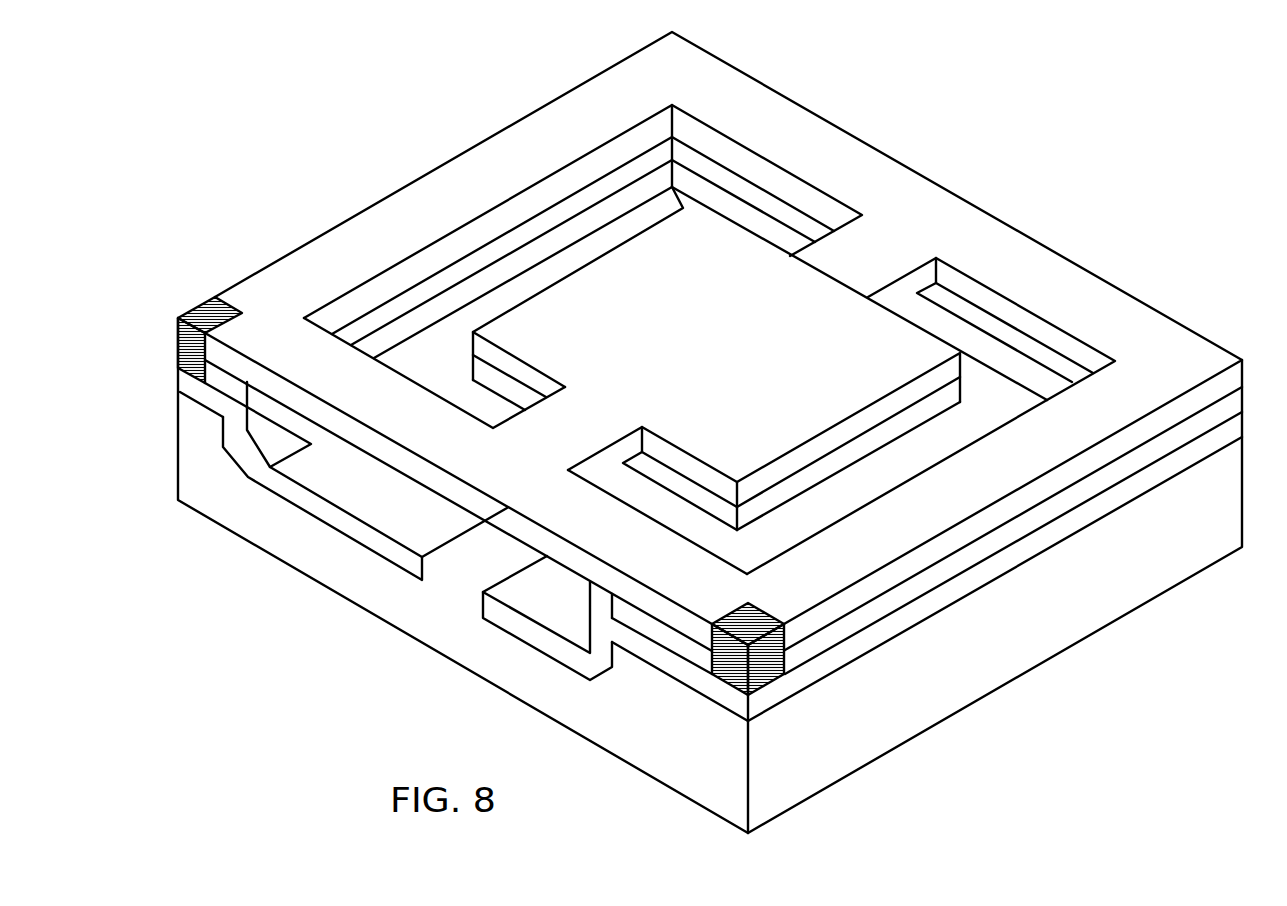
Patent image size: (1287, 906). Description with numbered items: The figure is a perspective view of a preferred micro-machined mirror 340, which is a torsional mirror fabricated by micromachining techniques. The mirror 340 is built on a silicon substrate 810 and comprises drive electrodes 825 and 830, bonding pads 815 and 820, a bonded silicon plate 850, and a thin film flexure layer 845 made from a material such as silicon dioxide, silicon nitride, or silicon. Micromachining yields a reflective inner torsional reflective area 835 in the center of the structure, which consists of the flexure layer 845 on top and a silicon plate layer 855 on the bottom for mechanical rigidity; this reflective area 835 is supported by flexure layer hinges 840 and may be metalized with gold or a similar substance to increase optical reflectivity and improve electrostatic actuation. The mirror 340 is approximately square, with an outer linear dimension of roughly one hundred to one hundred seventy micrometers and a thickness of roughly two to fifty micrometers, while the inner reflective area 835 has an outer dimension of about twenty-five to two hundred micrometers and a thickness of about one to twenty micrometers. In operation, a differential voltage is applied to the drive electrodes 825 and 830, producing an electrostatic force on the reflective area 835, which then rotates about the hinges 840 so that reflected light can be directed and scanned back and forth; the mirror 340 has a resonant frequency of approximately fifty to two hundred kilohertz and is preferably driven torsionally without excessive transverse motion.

The micro-machined mirror 340 is at (1161, 84).
The silicon substrate 810 is at (968, 655).
The bonding pad 815 is at (762, 610).
The bonding pad 820 is at (200, 305).
The drive electrode 825 is at (573, 602).
The drive electrode 830 is at (372, 487).
The inner torsional reflective area 835 is at (690, 355).
The flexure layer hinges 840 is at (882, 240).
The thin film flexure layer 845 is at (1197, 393).
The bonded silicon plate 850 is at (1218, 402).
The silicon plate layer 855 is at (1235, 425).